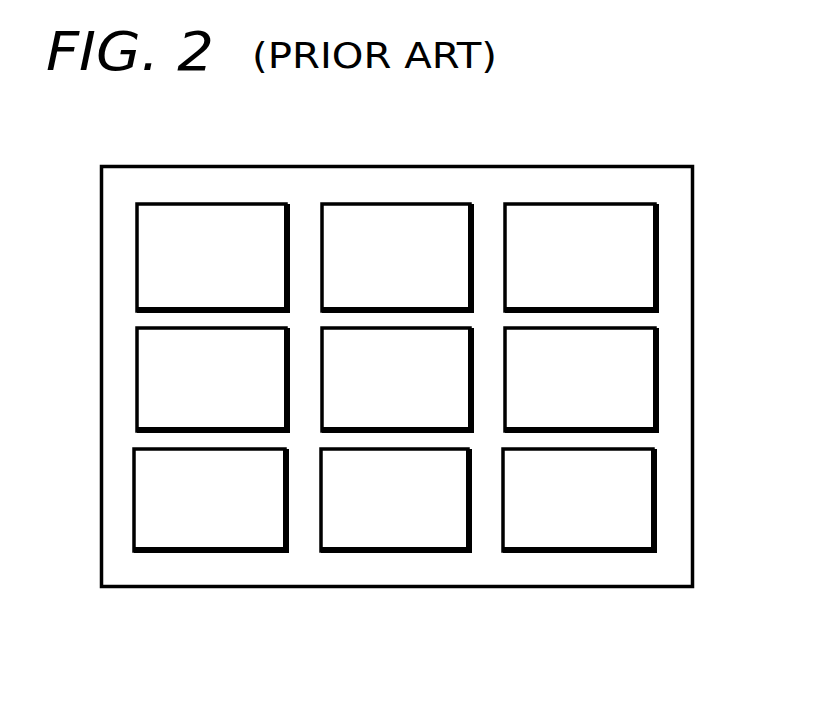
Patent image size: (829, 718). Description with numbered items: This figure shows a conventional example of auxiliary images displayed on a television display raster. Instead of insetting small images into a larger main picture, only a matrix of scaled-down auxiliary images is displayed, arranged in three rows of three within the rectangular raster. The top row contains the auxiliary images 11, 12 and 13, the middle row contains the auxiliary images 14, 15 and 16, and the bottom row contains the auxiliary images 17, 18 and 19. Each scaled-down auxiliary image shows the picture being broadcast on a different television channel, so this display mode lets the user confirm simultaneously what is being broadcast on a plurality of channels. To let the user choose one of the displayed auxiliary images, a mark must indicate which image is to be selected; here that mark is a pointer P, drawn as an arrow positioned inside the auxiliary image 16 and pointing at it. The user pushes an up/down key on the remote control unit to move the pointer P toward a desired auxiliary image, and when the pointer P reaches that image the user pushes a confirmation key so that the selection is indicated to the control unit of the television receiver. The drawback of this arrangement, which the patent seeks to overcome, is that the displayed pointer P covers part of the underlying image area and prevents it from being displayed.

The scaled-down auxiliary image 11 is at (213, 204).
The scaled-down auxiliary image 12 is at (382, 205).
The scaled-down auxiliary image 13 is at (577, 205).
The scaled-down auxiliary image 14 is at (137, 370).
The scaled-down auxiliary image 15 is at (322, 390).
The scaled-down auxiliary image 16 is at (655, 373).
The scaled-down auxiliary image 17 is at (227, 552).
The scaled-down auxiliary image 18 is at (402, 552).
The scaled-down auxiliary image 19 is at (585, 552).
The pointer P is at (562, 383).